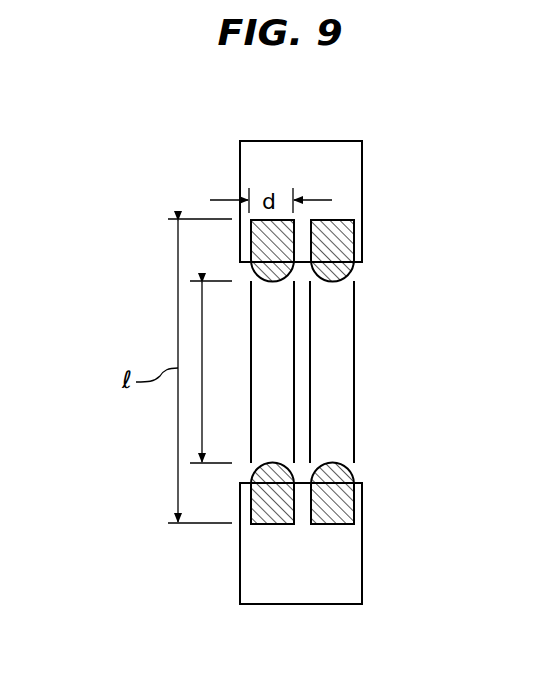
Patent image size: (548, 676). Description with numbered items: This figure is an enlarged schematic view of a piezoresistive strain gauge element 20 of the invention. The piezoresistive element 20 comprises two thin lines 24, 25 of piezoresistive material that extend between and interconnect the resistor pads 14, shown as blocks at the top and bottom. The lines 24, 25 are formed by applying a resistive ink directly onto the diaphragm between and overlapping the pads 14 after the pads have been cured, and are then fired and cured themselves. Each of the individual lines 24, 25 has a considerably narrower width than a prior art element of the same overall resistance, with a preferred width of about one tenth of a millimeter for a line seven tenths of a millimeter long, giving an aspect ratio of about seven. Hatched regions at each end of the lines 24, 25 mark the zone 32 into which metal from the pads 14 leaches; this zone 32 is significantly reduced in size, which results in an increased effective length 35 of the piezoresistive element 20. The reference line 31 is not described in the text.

The resistor pads 14 is at (251, 162).
The piezoresistive element 20 is at (146, 219).
The thin line 24 is at (295, 378).
The thin line 25 is at (353, 443).
The elongated member 31 is at (335, 327).
The zone 32 is at (340, 251).
The effective length 35 is at (203, 392).